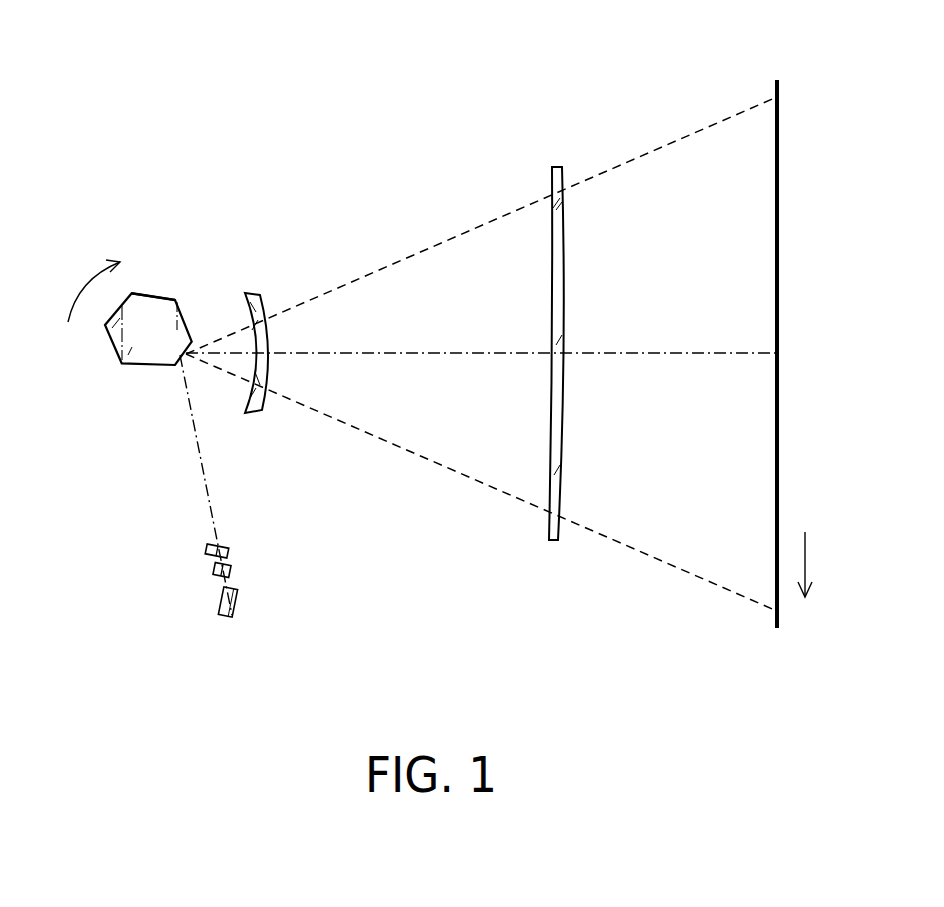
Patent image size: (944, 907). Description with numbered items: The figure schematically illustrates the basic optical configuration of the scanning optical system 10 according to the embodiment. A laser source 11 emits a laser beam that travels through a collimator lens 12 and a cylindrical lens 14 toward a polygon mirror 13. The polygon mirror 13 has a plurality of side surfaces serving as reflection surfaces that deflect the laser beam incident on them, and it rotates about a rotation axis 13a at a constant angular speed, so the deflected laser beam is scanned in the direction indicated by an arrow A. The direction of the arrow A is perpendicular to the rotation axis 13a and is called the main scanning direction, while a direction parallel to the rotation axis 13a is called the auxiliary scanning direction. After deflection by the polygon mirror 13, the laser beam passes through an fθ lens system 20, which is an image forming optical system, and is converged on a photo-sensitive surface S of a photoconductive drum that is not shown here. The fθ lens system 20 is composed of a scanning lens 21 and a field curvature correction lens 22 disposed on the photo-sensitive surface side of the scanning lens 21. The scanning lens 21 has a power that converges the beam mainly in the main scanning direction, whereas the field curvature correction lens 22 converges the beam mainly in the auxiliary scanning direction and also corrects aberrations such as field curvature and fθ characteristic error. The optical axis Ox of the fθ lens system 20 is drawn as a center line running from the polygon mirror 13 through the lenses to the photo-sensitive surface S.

The scanning optical system 10 is at (108, 104).
The laser source 11 is at (221, 602).
The collimator lens 12 is at (231, 570).
The polygon mirror 13 is at (113, 345).
The rotation axis 13a is at (157, 293).
The cylindrical lens 14 is at (210, 546).
The fθ lens system 20 is at (585, 73).
The scanning lens 21 is at (262, 292).
The field curvature correction lens 22 is at (553, 165).
The photo-sensitive surface S is at (774, 90).
The arrow A is at (805, 557).
The optical axis Ox is at (425, 352).